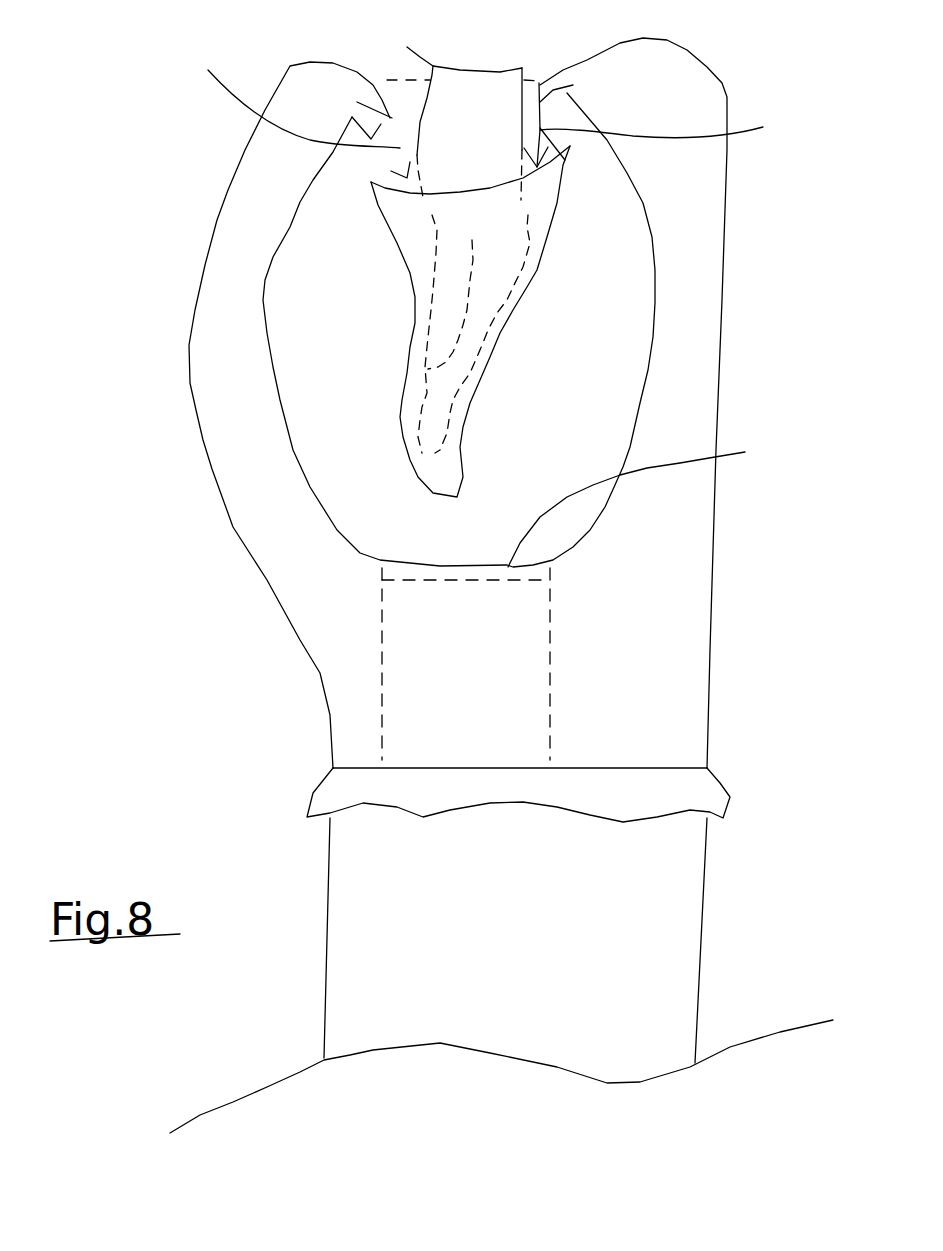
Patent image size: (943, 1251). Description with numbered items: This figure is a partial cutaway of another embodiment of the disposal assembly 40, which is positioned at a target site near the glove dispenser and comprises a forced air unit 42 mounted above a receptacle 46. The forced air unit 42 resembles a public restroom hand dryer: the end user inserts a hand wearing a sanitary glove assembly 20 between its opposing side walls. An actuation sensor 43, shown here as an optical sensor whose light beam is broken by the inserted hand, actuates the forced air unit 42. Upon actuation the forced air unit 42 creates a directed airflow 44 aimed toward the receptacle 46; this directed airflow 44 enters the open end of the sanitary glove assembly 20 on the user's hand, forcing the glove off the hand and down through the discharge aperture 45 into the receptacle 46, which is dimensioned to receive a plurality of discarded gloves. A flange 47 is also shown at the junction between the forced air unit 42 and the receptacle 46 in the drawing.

The sanitary glove assembly 20 is at (500, 333).
The disposal assembly 40 is at (123, 147).
The forced air unit 42 is at (212, 469).
The actuation sensor 43 is at (407, 176).
The directed airflow 44 is at (495, 97).
The discharge aperture 45 is at (655, 501).
The receptacle 46 is at (702, 940).
The flange 47 is at (717, 787).